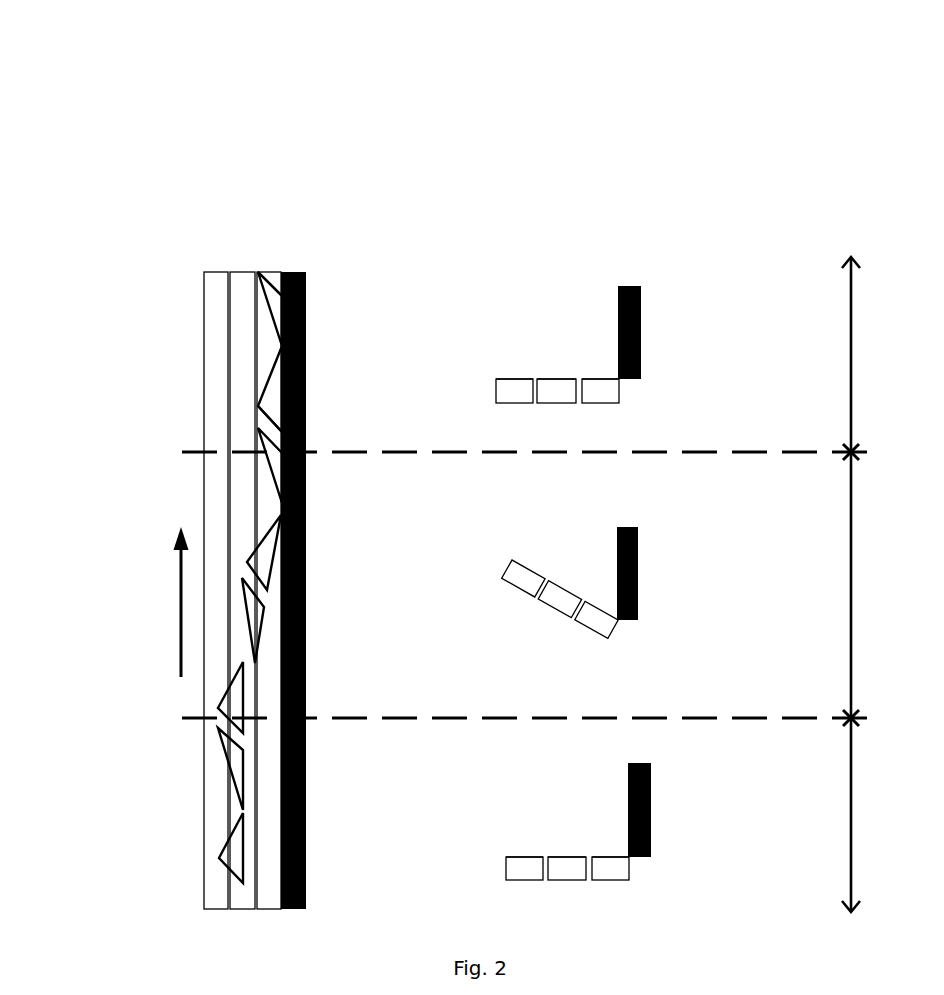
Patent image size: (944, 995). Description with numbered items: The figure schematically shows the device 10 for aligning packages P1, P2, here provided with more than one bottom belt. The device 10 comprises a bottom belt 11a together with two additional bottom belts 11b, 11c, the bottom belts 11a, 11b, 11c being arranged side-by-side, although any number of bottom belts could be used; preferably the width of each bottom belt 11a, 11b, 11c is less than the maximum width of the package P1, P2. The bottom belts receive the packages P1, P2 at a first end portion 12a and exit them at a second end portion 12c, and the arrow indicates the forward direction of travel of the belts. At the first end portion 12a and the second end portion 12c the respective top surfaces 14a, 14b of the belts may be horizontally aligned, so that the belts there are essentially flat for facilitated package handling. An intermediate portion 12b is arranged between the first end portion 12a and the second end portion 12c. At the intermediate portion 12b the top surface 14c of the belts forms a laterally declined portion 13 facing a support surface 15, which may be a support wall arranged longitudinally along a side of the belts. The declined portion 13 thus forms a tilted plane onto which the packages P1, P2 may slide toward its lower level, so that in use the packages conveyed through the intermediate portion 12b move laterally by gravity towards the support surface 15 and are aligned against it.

The device 10 is at (327, 218).
The bottom belt 11a is at (265, 349).
The bottom belt 11b is at (247, 378).
The bottom belt 11c is at (217, 409).
The first end portion 12a is at (858, 811).
The intermediate portion 12b is at (858, 581).
The second end portion 12c is at (858, 354).
The declined portion 13 is at (592, 556).
The top surface 14a is at (602, 378).
The top surface 14b is at (554, 379).
The top surface 14c is at (532, 385).
The support surface 15 is at (306, 483).
The package P1 is at (263, 305).
The package P2 is at (260, 408).